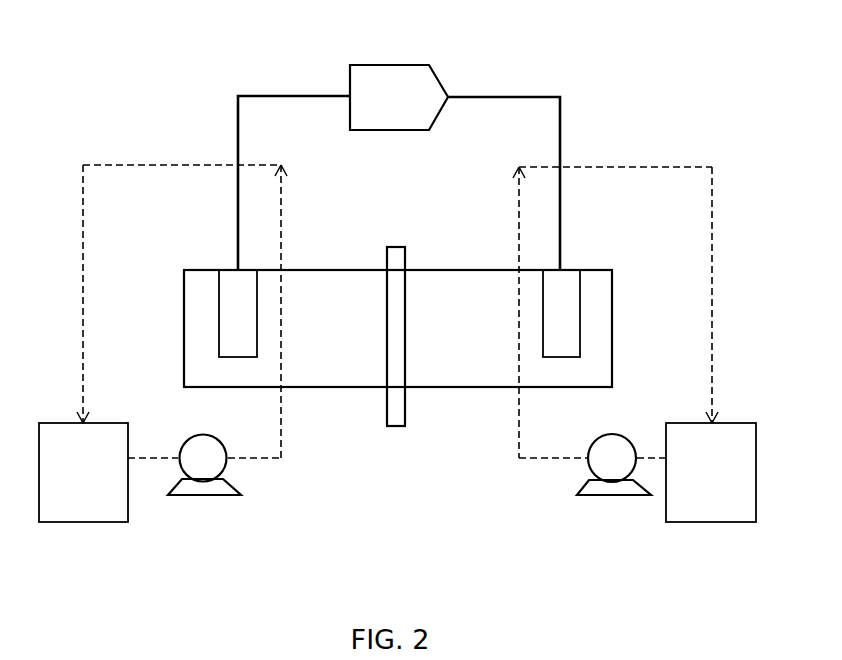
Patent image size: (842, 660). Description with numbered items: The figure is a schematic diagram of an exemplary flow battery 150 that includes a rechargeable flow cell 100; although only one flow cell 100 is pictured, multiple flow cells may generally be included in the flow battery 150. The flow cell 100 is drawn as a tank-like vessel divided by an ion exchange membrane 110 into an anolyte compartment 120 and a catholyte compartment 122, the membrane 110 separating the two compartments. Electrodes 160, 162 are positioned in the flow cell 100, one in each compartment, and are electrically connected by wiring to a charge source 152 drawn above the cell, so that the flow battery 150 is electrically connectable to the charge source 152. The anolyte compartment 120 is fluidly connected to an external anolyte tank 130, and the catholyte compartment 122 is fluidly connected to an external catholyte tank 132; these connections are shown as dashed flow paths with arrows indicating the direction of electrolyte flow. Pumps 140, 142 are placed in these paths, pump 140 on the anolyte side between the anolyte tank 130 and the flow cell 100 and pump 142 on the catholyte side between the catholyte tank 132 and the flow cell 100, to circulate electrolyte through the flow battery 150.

The rechargeable flow cell 100 is at (184, 343).
The ion exchange membrane 110 is at (407, 253).
The anolyte compartment 120 is at (489, 312).
The catholyte compartment 122 is at (315, 311).
The anolyte tank 130 is at (634, 344).
The catholyte tank 132 is at (163, 343).
The pump 140 is at (589, 465).
The pump 142 is at (228, 459).
The flow battery 150 is at (176, 77).
The charge source 152 is at (399, 97).
The electrode 160 is at (580, 297).
The electrode 162 is at (219, 297).